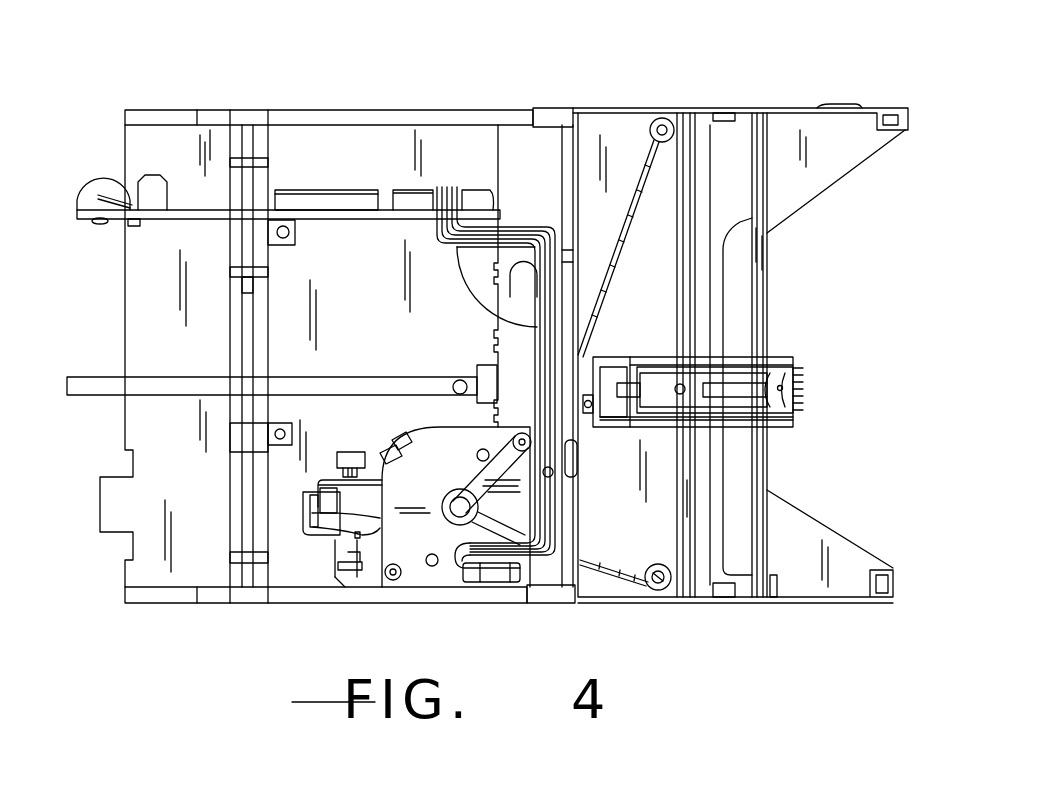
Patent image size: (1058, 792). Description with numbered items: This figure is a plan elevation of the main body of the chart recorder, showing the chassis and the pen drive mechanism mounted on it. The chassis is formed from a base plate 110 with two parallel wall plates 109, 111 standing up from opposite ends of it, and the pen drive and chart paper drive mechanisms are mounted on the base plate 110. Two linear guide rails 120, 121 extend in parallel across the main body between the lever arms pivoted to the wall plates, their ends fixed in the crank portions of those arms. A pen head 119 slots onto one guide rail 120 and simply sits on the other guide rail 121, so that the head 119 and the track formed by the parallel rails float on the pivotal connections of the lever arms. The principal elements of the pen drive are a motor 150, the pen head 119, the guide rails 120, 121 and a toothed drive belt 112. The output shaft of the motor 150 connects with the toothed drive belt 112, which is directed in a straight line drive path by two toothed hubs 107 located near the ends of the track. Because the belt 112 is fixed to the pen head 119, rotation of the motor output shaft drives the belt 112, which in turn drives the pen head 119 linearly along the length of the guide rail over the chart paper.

The toothed hub 107 is at (663, 112).
The wall plate 109 is at (220, 75).
The base plate 110 is at (120, 510).
The wall plate 111 is at (217, 593).
The toothed drive belt 112 is at (637, 137).
The pen head 119 is at (747, 342).
The guide rail 120 is at (688, 463).
The guide rail 121 is at (763, 228).
The motor 150 is at (417, 547).